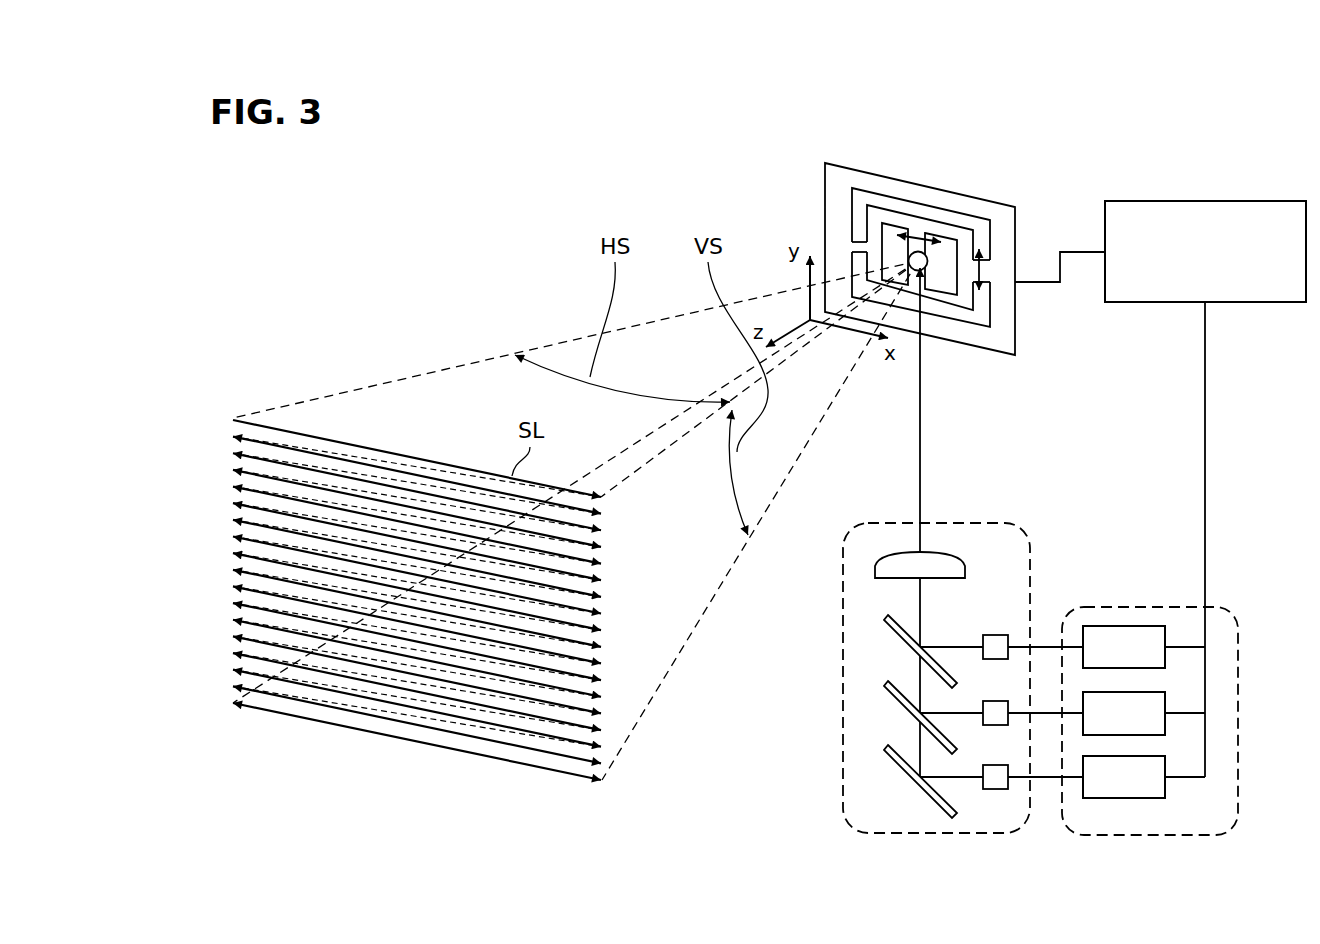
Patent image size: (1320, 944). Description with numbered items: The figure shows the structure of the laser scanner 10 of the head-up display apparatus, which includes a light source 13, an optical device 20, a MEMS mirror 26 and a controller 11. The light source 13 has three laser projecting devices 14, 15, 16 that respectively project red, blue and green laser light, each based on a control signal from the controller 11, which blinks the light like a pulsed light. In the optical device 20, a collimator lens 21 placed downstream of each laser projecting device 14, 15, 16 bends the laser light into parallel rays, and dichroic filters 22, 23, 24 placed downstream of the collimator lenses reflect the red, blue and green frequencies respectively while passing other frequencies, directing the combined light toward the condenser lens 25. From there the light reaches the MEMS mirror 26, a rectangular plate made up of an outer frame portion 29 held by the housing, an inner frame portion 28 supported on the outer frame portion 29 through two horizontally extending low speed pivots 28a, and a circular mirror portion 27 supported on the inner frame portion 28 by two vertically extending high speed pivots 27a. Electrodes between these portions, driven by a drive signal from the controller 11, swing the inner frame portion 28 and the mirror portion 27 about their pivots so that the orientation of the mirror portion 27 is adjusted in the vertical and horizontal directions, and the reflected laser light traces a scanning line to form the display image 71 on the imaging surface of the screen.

The laser scanner 10 is at (1212, 150).
The controller 11 is at (1233, 201).
The light source 13 is at (1235, 612).
The laser projecting device 14 is at (1147, 668).
The laser projecting device 15 is at (1147, 735).
The laser projecting device 16 is at (1147, 798).
The optical device 20 is at (1030, 548).
The collimator lens 21 is at (1008, 765).
The dichroic filter 22 is at (885, 622).
The dichroic filter 23 is at (888, 688).
The dichroic filter 24 is at (888, 752).
The condenser lens 25 is at (878, 574).
The MEMS mirror 26 is at (975, 207).
The mirror portion 27 is at (932, 257).
The high speed pivot 27a is at (922, 234).
The inner frame portion 28 is at (873, 220).
The low speed pivot 28a is at (858, 244).
The outer frame portion 29 is at (834, 197).
The display image 71 is at (226, 437).